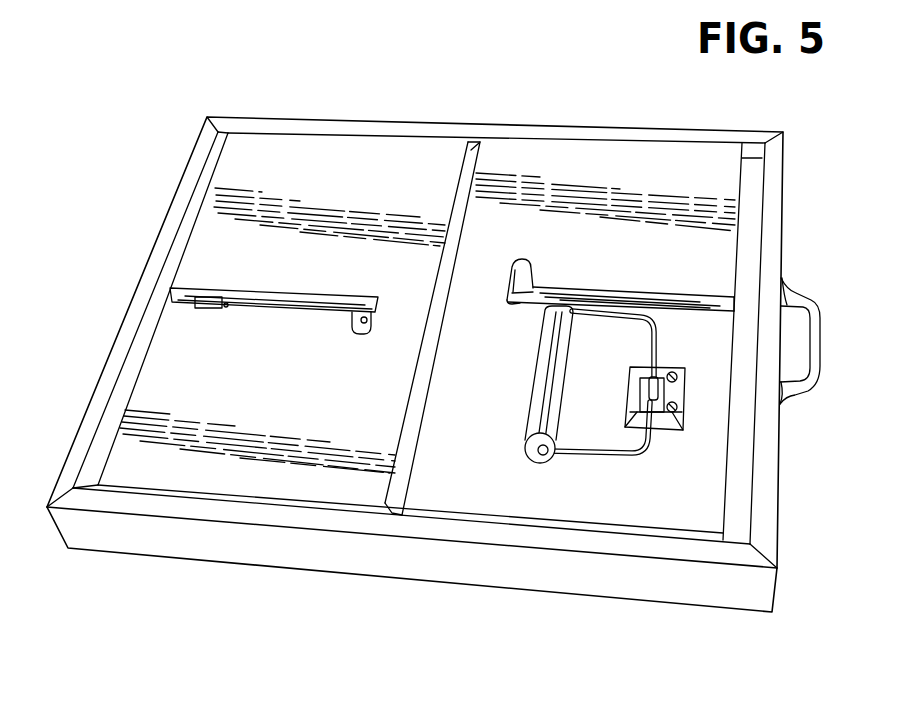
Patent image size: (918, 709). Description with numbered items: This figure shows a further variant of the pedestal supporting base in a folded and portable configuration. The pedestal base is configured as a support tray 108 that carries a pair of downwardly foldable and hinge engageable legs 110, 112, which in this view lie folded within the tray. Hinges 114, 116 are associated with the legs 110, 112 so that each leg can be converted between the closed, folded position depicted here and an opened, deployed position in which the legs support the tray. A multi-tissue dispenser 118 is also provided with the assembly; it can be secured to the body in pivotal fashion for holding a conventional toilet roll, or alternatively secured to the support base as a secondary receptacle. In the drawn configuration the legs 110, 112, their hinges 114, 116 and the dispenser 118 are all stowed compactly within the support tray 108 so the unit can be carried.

The support tray 108 is at (384, 565).
The leg 110 is at (325, 393).
The leg 112 is at (508, 386).
The hinge 114 is at (263, 298).
The hinge 116 is at (622, 302).
The multi-tissue dispenser 118 is at (536, 432).